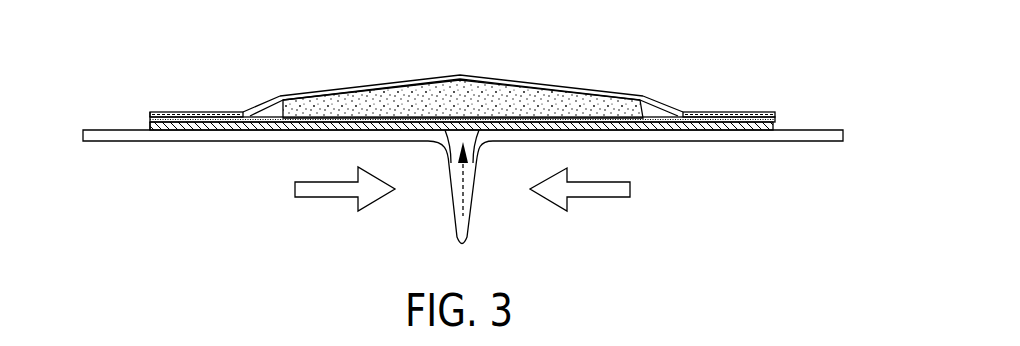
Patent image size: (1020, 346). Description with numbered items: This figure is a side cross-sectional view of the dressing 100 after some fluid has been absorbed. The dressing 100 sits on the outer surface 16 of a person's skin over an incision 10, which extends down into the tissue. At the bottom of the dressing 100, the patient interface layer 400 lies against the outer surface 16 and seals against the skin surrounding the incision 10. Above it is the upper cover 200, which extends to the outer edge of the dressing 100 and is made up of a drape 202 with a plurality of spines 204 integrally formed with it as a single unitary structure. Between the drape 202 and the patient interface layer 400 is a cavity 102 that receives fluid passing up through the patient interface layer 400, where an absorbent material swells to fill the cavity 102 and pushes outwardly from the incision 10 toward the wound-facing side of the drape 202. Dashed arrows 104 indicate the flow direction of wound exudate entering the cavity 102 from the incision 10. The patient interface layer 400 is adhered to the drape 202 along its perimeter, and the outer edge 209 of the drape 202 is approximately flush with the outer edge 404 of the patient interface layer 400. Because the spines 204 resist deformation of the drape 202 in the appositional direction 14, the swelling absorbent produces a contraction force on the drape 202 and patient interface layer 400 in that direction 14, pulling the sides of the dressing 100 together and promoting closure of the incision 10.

The dressing 100 is at (569, 38).
The upper cover 200 is at (230, 95).
The drape 202 is at (660, 105).
The spines 204 is at (402, 85).
The outer edge of the drape 209 is at (148, 118).
The patient interface layer 400 is at (185, 128).
The outer edge of the patient interface layer 404 is at (150, 127).
The cavity 102 is at (268, 128).
The dashed arrows 104 is at (458, 182).
The incision 10 is at (488, 230).
The appositional direction 14 is at (332, 198).
The outer surface 16 is at (826, 126).